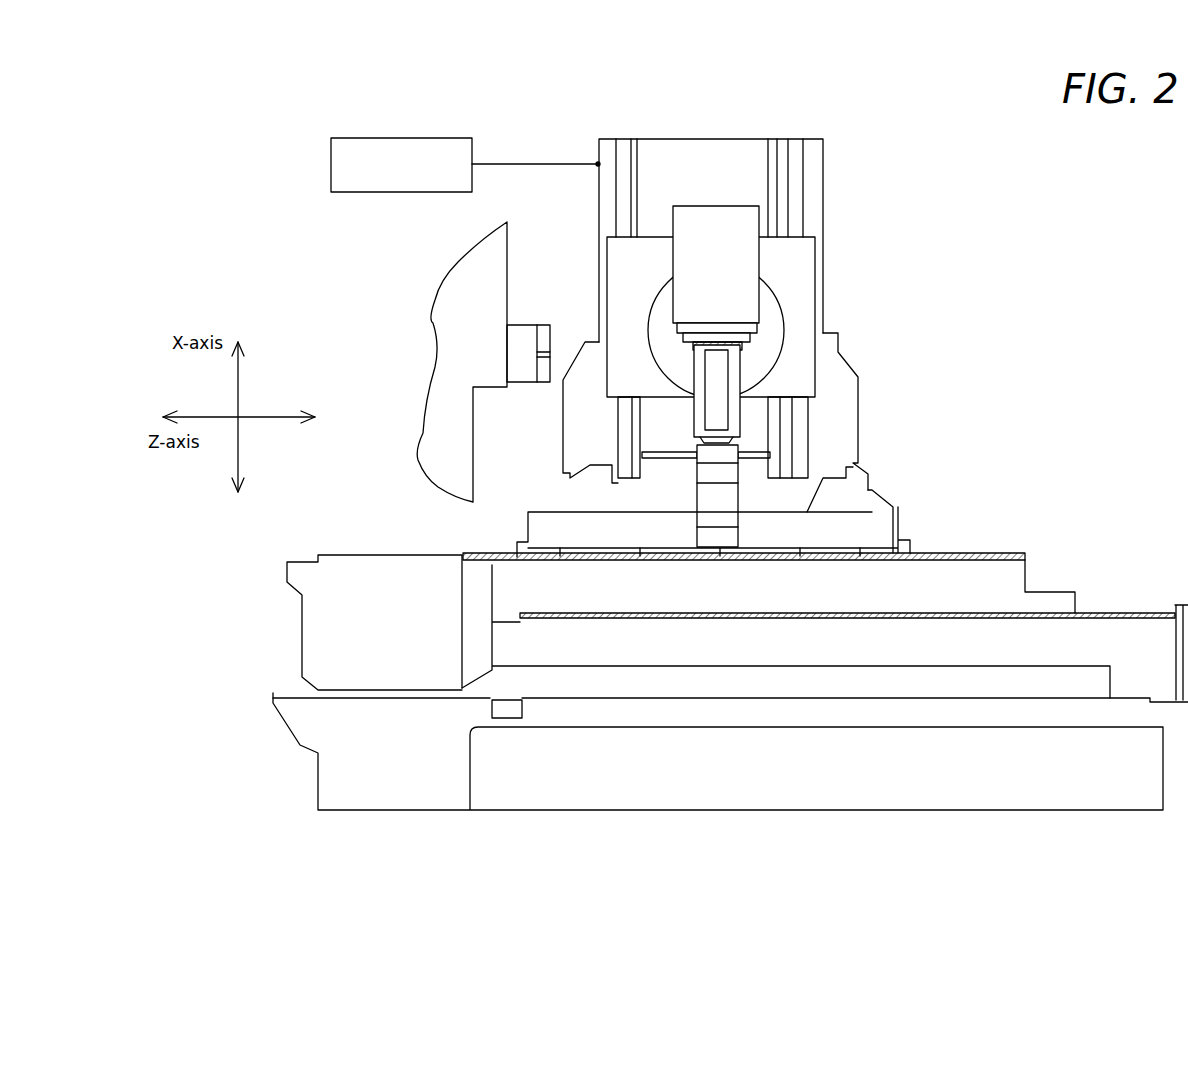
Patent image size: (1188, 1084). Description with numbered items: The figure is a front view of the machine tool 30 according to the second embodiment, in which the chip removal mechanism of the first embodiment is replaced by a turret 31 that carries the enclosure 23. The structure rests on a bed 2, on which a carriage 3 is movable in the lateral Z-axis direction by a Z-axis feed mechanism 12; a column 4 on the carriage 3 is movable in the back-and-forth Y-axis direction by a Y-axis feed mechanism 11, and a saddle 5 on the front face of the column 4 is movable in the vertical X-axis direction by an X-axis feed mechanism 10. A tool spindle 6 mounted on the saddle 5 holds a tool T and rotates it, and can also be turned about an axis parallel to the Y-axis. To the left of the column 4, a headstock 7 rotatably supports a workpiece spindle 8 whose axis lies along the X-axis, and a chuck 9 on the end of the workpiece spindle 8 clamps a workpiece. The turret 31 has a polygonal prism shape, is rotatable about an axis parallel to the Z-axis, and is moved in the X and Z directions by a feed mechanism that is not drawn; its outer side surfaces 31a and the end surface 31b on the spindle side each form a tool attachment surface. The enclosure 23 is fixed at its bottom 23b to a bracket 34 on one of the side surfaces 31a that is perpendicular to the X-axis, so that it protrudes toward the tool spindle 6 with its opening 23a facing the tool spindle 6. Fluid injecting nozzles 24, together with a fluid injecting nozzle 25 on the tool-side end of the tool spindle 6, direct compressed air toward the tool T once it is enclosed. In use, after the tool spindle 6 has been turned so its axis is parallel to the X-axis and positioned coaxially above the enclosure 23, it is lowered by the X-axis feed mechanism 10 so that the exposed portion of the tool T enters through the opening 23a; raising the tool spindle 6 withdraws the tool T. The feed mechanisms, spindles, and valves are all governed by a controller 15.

The bed 2 is at (370, 555).
The carriage 3 is at (893, 525).
The column 4 is at (722, 138).
The saddle 5 is at (810, 265).
The tool spindle 6 is at (757, 218).
The headstock 7 is at (458, 264).
The workpiece spindle 8 is at (507, 335).
The chuck 9 is at (507, 362).
The X-axis feed mechanism 10 is at (629, 127).
The Y-axis feed mechanism 11 is at (883, 473).
The Z-axis feed mechanism 12 is at (1043, 574).
The controller 15 is at (398, 138).
The enclosure 23 is at (740, 408).
The opening 23a is at (705, 345).
The bottom 23b is at (697, 447).
The fluid injecting nozzles 24 is at (733, 437).
The fluid injecting nozzle 25 is at (730, 350).
The machine tool 30 is at (1024, 234).
The turret 31 is at (735, 485).
The outer side surfaces 31a is at (707, 483).
The end surface 31b is at (684, 518).
The bracket 34 is at (735, 442).
The tool T is at (707, 370).